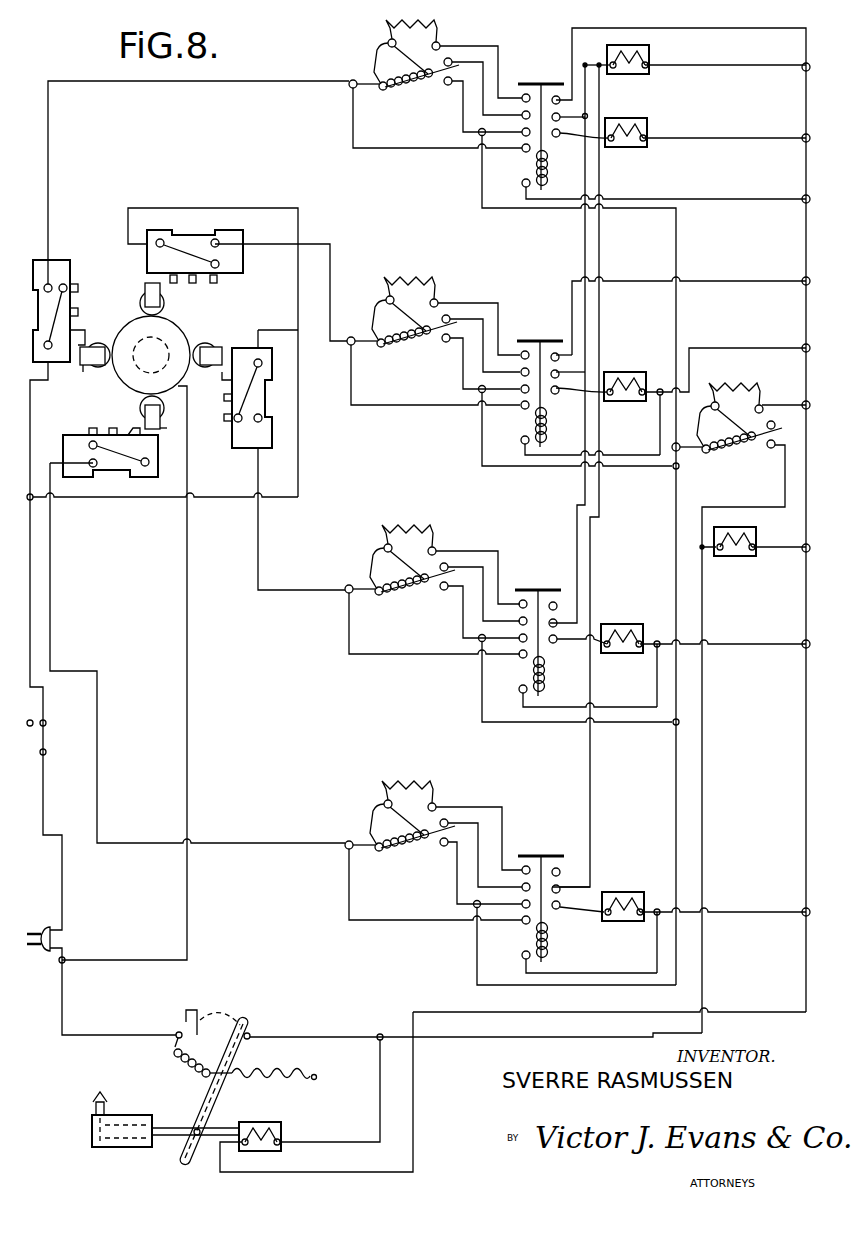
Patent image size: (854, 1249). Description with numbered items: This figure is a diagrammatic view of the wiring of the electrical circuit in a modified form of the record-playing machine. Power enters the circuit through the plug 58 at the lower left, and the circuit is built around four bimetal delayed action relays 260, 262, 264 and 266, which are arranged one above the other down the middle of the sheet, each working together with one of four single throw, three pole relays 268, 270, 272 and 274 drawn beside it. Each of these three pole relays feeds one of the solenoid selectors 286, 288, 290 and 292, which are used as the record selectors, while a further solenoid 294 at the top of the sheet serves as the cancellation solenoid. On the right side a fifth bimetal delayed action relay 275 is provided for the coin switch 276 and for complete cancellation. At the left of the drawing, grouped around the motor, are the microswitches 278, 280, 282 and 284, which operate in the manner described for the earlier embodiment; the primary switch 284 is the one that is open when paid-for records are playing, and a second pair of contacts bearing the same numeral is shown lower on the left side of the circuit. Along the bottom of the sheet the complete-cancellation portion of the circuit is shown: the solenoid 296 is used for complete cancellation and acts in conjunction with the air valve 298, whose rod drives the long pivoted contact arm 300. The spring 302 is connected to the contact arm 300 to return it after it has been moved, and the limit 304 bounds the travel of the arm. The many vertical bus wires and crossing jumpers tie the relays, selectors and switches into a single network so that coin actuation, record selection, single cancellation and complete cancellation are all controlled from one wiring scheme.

The plug 58 is at (65, 925).
The bimetal delayed action relay 260 is at (395, 92).
The bimetal delayed action relay 262 is at (395, 347).
The bimetal delayed action relay 264 is at (395, 600).
The bimetal delayed action relay 266 is at (393, 857).
The single throw, three pole relay 268 is at (540, 75).
The single throw, three pole relay 270 is at (540, 333).
The single throw, three pole relay 272 is at (540, 580).
The single throw, three pole relay 274 is at (545, 843).
The bimetal delayed action relay 275 is at (732, 455).
The coin switch 276 is at (736, 556).
The microswitch 278 is at (72, 262).
The microswitch 280 is at (168, 232).
The microswitch 282 is at (272, 432).
The primary switch 284 is at (146, 470).
The solenoid selector 286 is at (649, 150).
The solenoid selector 288 is at (630, 403).
The solenoid selector 290 is at (625, 655).
The solenoid selector 292 is at (625, 890).
The cancellation solenoid 294 is at (648, 52).
The solenoid 296 is at (284, 1125).
The air valve 298 is at (128, 1122).
The contact arm 300 is at (212, 1107).
The spring 302 is at (247, 1056).
The limit 304 is at (195, 1010).